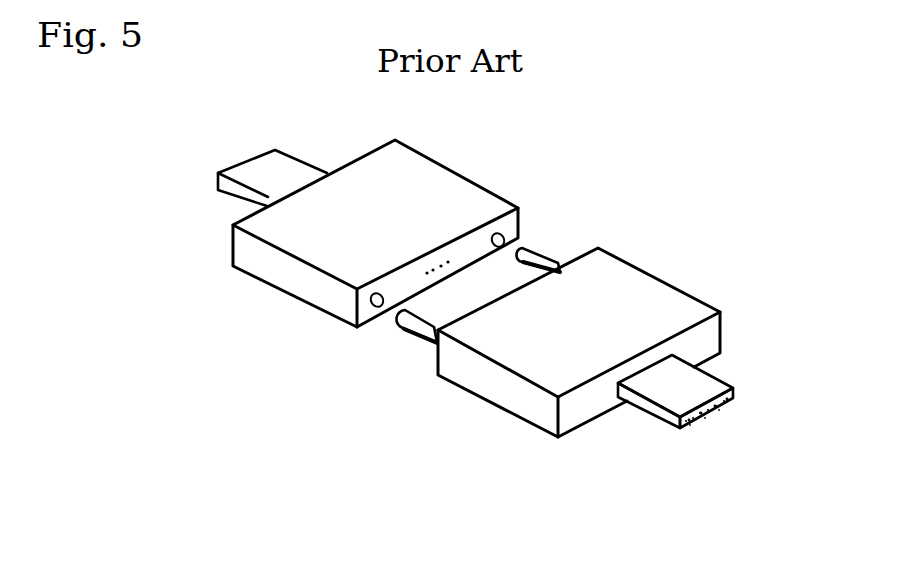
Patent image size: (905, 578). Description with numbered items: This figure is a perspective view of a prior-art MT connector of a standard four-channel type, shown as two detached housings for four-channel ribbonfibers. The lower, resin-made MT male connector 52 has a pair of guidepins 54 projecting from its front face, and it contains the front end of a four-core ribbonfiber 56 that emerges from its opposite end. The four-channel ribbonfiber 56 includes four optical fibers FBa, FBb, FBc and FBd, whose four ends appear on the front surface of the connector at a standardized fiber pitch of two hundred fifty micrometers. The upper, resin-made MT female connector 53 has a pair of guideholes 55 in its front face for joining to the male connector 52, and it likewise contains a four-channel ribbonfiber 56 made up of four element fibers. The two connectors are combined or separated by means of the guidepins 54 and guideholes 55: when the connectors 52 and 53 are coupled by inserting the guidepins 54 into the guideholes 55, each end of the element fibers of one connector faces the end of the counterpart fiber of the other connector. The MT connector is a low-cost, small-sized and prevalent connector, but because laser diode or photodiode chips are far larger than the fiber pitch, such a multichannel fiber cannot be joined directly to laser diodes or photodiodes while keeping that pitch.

The MT male connector 52 is at (612, 290).
The MT female connector 53 is at (418, 192).
The guidepins 54 is at (533, 258).
The guideholes 55 is at (377, 307).
The four-channel ribbonfiber 56 is at (275, 166).
The optical fiber FBa is at (732, 400).
The optical fiber FBb is at (722, 408).
The optical fiber FBc is at (703, 415).
The optical fiber FBd is at (690, 423).